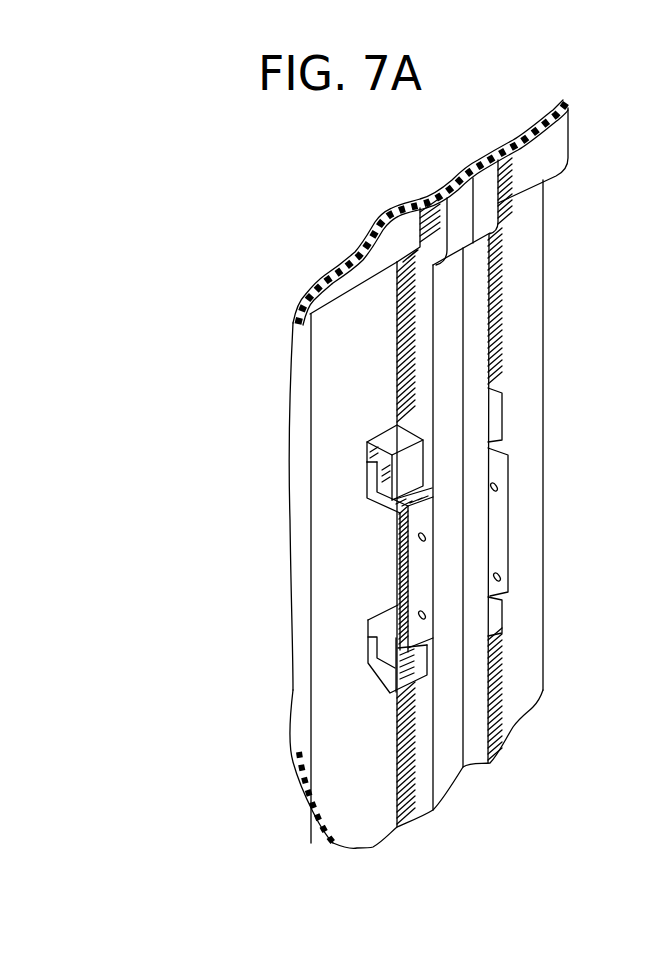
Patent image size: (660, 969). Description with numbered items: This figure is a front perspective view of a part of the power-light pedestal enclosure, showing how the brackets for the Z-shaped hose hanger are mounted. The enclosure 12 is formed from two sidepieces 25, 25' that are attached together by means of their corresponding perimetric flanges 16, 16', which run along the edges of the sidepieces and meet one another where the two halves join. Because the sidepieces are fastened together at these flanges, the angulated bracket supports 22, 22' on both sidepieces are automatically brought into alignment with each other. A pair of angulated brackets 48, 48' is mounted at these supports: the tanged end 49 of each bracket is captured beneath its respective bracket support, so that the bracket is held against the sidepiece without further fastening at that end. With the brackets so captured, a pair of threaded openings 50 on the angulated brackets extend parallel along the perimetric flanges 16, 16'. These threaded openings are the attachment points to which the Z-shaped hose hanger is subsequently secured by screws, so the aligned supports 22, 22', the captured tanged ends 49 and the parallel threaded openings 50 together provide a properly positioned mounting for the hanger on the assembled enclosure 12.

The enclosure 12 is at (417, 484).
The perimetric flange 16 is at (410, 502).
The perimetric flange 16' is at (565, 460).
The angulated bracket support 22 is at (378, 436).
The angulated bracket support 22' is at (559, 496).
The sidepiece 25 is at (371, 474).
The sidepiece 25' is at (579, 399).
The angulated bracket 48 is at (313, 568).
The angulated bracket 48' is at (559, 522).
The tanged end 49 is at (368, 483).
The threaded opening 50 is at (500, 487).